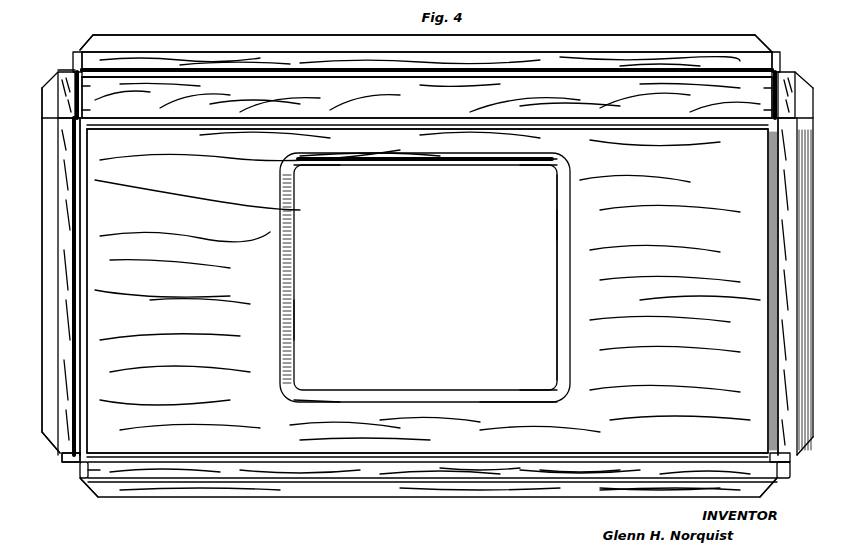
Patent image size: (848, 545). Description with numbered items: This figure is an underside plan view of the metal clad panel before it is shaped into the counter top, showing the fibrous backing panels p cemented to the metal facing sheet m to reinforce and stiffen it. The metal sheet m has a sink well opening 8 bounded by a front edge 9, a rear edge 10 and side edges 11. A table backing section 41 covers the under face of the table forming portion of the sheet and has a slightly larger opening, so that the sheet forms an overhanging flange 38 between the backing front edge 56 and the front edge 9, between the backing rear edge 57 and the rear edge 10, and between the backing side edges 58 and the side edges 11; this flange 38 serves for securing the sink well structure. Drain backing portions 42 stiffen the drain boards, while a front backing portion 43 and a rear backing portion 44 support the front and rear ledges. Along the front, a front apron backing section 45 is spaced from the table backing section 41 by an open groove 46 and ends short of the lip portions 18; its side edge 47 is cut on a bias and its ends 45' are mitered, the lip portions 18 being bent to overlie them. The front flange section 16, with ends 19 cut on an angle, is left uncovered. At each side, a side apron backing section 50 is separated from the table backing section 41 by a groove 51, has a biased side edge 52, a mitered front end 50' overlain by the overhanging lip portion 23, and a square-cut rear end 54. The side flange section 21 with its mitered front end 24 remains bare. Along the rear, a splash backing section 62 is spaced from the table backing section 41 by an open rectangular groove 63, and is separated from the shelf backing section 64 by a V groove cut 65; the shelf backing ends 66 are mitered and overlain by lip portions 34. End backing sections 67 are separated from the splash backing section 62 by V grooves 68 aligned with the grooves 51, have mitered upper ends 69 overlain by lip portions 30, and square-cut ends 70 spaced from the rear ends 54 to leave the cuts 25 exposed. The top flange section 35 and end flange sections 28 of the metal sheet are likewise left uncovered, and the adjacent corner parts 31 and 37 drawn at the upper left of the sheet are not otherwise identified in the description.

The sink well opening 8 is at (542, 312).
The front edge 9 is at (404, 392).
The rear edge 10 is at (416, 168).
The side edges 11 is at (292, 264).
The front flange section 16 is at (384, 492).
The lip portion 18 is at (82, 472).
The end of front flange section 19 is at (96, 496).
The side flange section 21 is at (50, 362).
The overhanging lip portion 23 is at (68, 464).
The front end of side flange section 24 is at (46, 444).
The cut line 25 is at (78, 166).
The flange section 28 is at (58, 95).
The lip portion 30 is at (66, 66).
The corner chamfer 31 is at (42, 86).
The lip portion 34 is at (77, 50).
The flange section 35 is at (222, 35).
The top chamfer 37 is at (90, 48).
The overhanging flange 38 is at (362, 168).
The table backing section 41 is at (702, 434).
The drain backing portions 42 is at (455, 300).
The front backing portion 43 is at (430, 426).
The rear backing portion 44 is at (380, 156).
The front apron backing section 45 is at (480, 447).
The mitered ends of front apron backing section 45' is at (84, 500).
The open groove 46 is at (566, 456).
The side edge of front apron backing section 47 is at (612, 466).
The side apron backing section 50 is at (427, 286).
The front ends of side backing sections 50' is at (101, 432).
The groove 51 is at (82, 292).
The side edge of side apron backing section 52 is at (78, 252).
The rear end of side apron backing section 54 is at (76, 146).
The front edge of backing sheet 56 is at (488, 406).
The rear edge of backing sheet 57 is at (497, 166).
The side edges of backing sheet 58 is at (292, 326).
The splash backing section 62 is at (548, 80).
The open rectangular groove 63 is at (422, 108).
The shelf backing section 64 is at (616, 62).
The V groove cut 65 is at (634, 76).
The ends of shelf backing section 66 is at (84, 68).
The end backing section 67 is at (776, 138).
The V groove 68 is at (84, 112).
The upper ends of end backing sections 69 is at (84, 90).
The end of end backing section 70 is at (796, 80).
The metal facing sheet m is at (738, 40).
The fibrous backing panels p is at (186, 448).